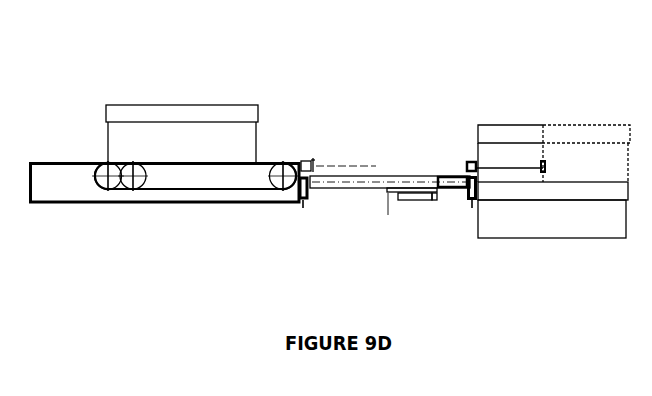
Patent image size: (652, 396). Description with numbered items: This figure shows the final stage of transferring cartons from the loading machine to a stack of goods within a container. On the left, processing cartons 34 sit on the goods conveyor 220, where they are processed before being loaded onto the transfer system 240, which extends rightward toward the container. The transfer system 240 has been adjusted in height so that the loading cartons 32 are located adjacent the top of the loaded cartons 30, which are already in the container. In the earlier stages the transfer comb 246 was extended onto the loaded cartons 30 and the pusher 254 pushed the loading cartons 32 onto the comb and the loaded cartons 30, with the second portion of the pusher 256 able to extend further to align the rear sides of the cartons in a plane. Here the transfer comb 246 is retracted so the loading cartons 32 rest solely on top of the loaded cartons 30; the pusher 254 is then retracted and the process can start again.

The loaded cartons 30 is at (562, 238).
The loading cartons 32 is at (580, 125).
The processing cartons 34 is at (183, 105).
The goods conveyor 220 is at (182, 234).
The transfer system 240 is at (398, 234).
The transfer comb 246 is at (465, 177).
The pusher 254 is at (465, 163).
The second portion of the pusher 256 is at (499, 168).